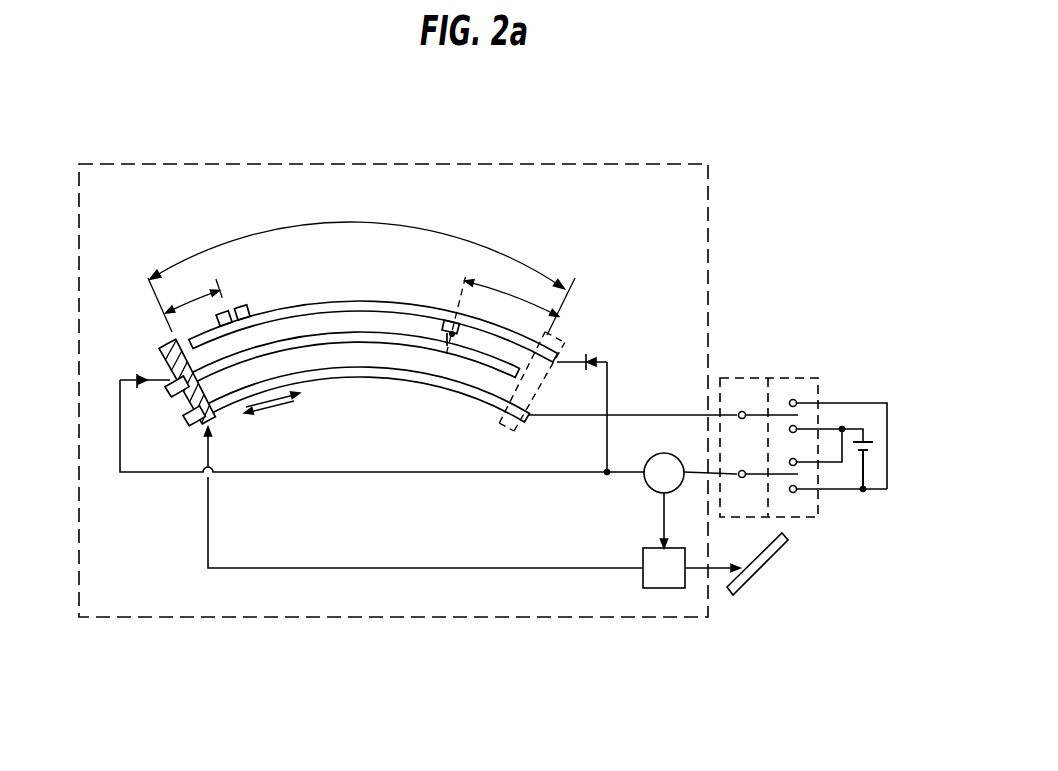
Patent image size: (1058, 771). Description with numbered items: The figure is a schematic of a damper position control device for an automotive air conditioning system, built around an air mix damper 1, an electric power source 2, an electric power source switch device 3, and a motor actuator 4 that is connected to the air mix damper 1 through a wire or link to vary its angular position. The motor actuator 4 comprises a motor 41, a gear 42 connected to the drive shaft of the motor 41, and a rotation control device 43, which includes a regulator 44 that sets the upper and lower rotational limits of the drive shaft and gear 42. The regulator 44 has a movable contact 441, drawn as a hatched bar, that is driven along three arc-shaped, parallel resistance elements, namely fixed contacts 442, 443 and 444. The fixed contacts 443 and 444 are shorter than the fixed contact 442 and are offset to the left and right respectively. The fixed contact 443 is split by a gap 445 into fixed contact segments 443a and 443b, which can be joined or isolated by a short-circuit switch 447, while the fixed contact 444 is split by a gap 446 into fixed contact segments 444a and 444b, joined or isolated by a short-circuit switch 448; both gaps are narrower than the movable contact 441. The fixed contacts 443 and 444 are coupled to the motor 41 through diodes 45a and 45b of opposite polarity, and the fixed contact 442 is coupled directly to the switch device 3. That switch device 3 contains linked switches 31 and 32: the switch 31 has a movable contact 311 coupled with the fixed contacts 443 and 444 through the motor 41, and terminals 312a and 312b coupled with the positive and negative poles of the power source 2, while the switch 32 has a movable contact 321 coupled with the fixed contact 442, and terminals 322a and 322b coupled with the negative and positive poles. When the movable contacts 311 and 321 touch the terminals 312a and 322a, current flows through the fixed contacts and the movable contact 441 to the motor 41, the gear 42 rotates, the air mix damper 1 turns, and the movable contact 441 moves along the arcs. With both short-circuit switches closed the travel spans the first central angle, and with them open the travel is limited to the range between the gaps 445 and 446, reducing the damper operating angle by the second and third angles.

The air mix damper 1 is at (760, 582).
The electric power source 2 is at (868, 452).
The electric power source switch device 3 is at (720, 430).
The motor actuator 4 is at (619, 163).
The switch 31 is at (773, 512).
The switch 32 is at (775, 376).
The motor 41 is at (645, 490).
The gear 42 is at (658, 590).
The rotation control device 43 is at (140, 322).
The regulator 44 is at (135, 335).
The diode 45a is at (137, 388).
The diode 45b is at (586, 355).
The movable contact 311 is at (783, 478).
The terminal 312a is at (796, 492).
The terminal 312b is at (797, 465).
The movable contact 321 is at (781, 415).
The terminal 322a is at (794, 427).
The terminal 322b is at (794, 401).
The movable contact 441 is at (176, 393).
The fixed contact 442 is at (378, 378).
The fixed contact 443 is at (457, 357).
The fixed contact segment 443a is at (340, 344).
The fixed contact segment 443b is at (505, 410).
The fixed contact 444 is at (480, 330).
The fixed contact segment 444a is at (548, 335).
The fixed contact segment 444b is at (172, 330).
The gap 445 is at (447, 347).
The gap 446 is at (248, 310).
The short-circuit switch 447 is at (445, 322).
The short-circuit switch 448 is at (224, 310).